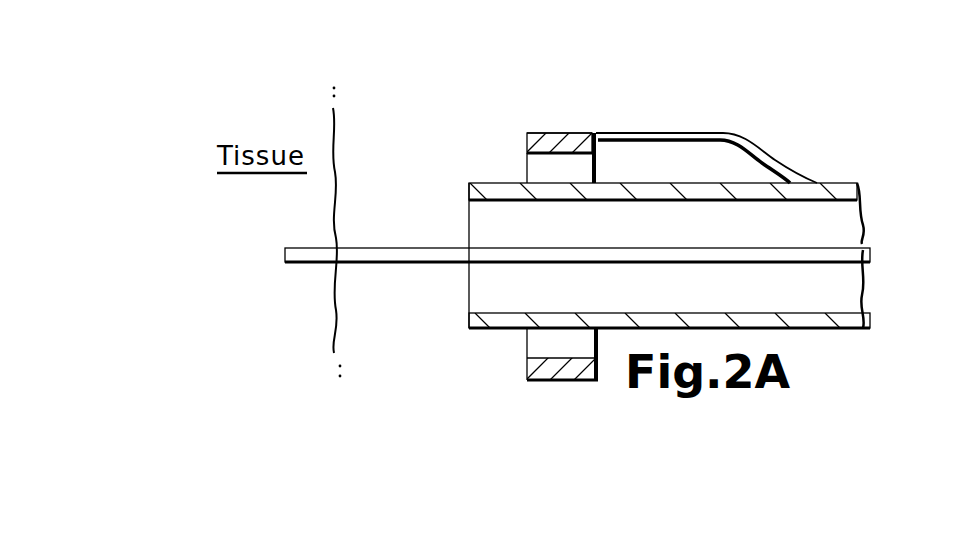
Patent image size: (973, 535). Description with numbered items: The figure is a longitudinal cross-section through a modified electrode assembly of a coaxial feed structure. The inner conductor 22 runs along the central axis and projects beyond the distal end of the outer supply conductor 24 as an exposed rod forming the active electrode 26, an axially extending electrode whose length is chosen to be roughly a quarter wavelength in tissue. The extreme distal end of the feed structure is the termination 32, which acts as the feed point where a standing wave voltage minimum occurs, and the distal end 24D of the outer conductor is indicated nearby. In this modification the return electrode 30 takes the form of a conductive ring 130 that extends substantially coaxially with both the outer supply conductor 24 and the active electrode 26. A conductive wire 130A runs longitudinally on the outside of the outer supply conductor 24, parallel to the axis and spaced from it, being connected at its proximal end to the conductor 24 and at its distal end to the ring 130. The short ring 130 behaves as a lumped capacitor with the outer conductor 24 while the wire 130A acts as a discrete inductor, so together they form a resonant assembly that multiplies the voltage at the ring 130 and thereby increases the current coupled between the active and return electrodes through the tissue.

The inner conductor 22 is at (787, 262).
The outer supply conductor 24 is at (848, 193).
The distal end of outer tube 24D is at (469, 190).
The active electrode 26 is at (405, 263).
The return electrode 30 is at (556, 127).
The termination of the feed structure 32 is at (468, 332).
The conductive ring 130 is at (531, 133).
The conductive wire 130A is at (728, 133).